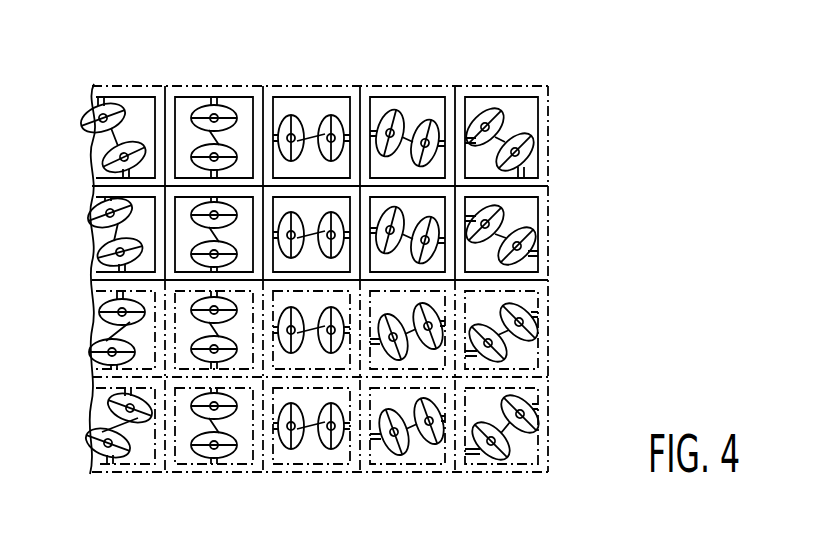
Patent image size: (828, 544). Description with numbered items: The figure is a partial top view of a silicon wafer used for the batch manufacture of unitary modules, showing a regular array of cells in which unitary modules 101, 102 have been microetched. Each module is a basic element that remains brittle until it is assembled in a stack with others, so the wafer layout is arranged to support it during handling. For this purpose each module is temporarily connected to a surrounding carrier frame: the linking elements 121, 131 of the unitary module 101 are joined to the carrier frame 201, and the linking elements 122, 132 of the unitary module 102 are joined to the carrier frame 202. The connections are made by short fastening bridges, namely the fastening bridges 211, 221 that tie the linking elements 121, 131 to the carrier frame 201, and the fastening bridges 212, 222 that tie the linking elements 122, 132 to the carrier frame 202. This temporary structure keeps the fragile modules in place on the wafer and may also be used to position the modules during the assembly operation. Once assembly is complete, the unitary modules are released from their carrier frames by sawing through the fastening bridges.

The unitary module 101 is at (389, 93).
The unitary module 102 is at (560, 206).
The linking element 121 is at (386, 125).
The linking element 122 is at (506, 214).
The linking element 131 is at (445, 146).
The linking element 132 is at (532, 237).
The carrier frame 201 is at (363, 128).
The carrier frame 202 is at (520, 277).
The fastening bridge 211 is at (378, 126).
The fastening bridge 212 is at (482, 205).
The fastening bridge 221 is at (467, 134).
The fastening bridge 222 is at (540, 252).